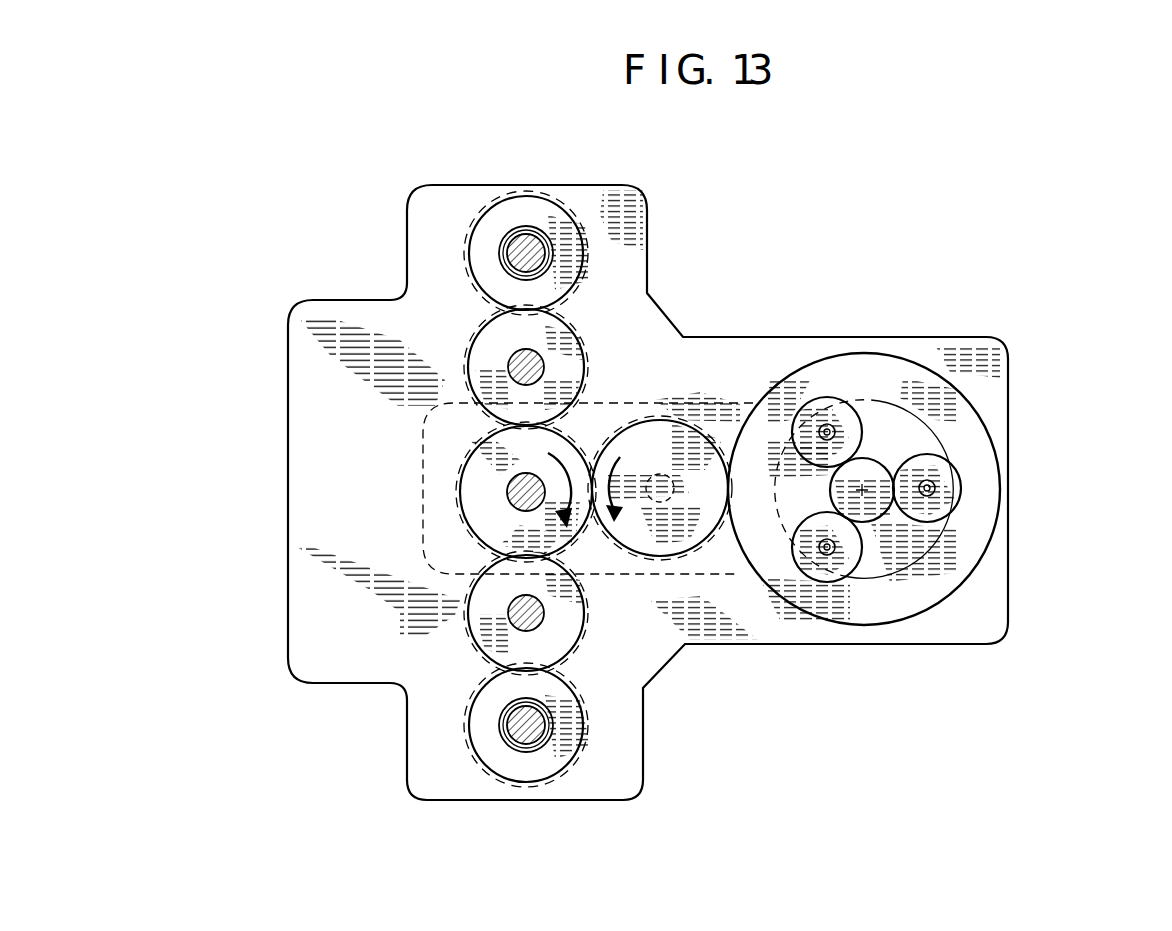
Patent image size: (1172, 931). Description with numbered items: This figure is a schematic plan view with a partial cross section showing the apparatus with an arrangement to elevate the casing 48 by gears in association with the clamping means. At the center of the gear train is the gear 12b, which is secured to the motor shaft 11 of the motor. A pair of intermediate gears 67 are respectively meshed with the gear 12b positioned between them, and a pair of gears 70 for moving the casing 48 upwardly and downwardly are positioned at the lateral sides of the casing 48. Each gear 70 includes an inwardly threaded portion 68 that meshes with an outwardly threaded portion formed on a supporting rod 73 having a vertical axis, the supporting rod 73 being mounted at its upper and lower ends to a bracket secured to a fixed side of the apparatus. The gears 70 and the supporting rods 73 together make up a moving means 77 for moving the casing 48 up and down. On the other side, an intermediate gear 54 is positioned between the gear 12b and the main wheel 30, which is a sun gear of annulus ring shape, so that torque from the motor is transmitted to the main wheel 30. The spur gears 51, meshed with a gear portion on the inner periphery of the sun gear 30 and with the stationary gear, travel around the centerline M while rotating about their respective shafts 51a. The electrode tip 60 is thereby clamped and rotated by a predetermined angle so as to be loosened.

The moving means 77 is at (523, 812).
The casing 48 is at (796, 646).
The supporting rod 73 is at (562, 232).
The inwardly threaded portion 68 is at (480, 216).
The gear 70 is at (527, 227).
The intermediate gear 67 is at (493, 330).
The gear 12b is at (483, 455).
The motor shaft 11 is at (505, 490).
The intermediate gear 54 is at (712, 520).
The electrode tip 60 is at (890, 500).
The main wheel 30 is at (917, 598).
The spur gear 51 is at (812, 418).
The shaft 51a is at (830, 425).
The centerline M is at (861, 489).